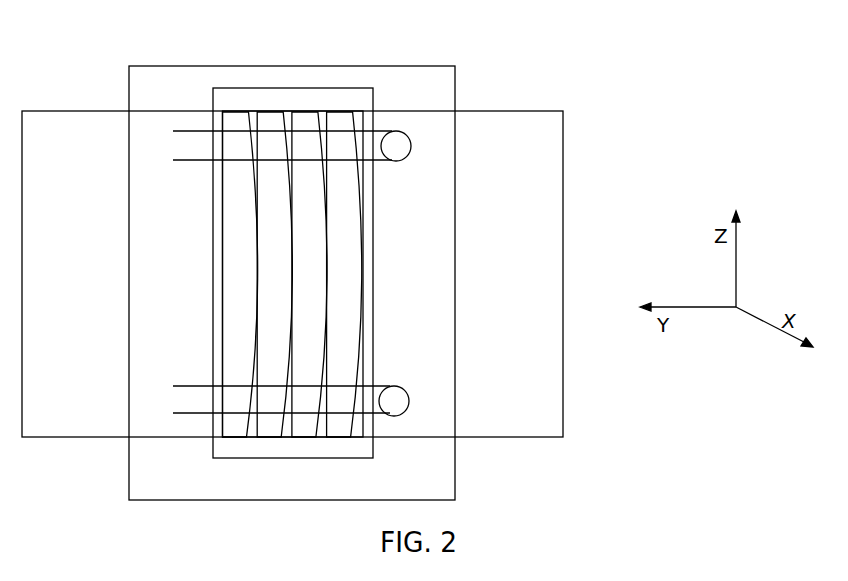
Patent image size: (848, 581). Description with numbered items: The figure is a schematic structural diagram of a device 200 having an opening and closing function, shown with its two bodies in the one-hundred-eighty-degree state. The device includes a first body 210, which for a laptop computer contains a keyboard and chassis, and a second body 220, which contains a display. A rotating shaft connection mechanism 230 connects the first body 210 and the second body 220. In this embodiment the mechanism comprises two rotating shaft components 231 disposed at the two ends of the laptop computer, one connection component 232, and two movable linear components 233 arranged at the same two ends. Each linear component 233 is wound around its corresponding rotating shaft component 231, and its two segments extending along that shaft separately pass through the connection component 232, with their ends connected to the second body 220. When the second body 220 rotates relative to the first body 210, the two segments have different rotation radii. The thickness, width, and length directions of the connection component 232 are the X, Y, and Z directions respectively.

The heat dissipation device 200 is at (292, 250).
The first body 210 is at (467, 410).
The second body 220 is at (109, 410).
The rotating shaft connection mechanism 230 is at (455, 98).
The rotating shaft component 231 is at (405, 155).
The connection component 232 is at (373, 447).
The linear component 233 is at (192, 147).